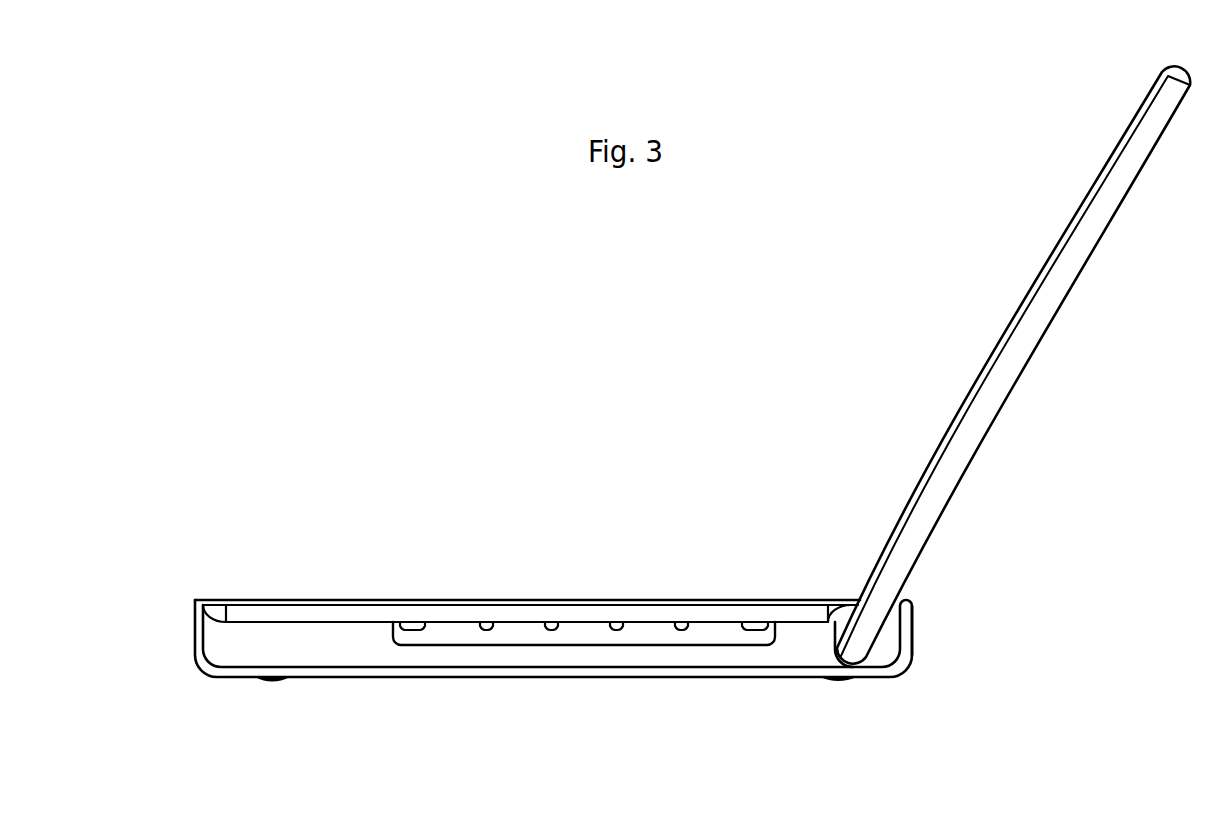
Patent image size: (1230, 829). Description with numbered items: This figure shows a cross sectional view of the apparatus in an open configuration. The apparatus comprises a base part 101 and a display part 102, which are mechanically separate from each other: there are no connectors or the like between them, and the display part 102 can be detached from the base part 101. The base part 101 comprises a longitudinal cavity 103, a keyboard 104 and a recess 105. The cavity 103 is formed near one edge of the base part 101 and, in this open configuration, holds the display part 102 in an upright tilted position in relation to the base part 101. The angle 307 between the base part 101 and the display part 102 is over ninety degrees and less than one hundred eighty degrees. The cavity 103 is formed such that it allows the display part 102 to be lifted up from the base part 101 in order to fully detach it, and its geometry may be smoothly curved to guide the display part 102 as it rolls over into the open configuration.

The base part 101 is at (795, 677).
The display part 102 is at (1066, 305).
The longitudinal cavity 103 is at (888, 638).
The keyboard 104 is at (476, 635).
The recess 105 is at (252, 615).
The angle 307 is at (881, 540).